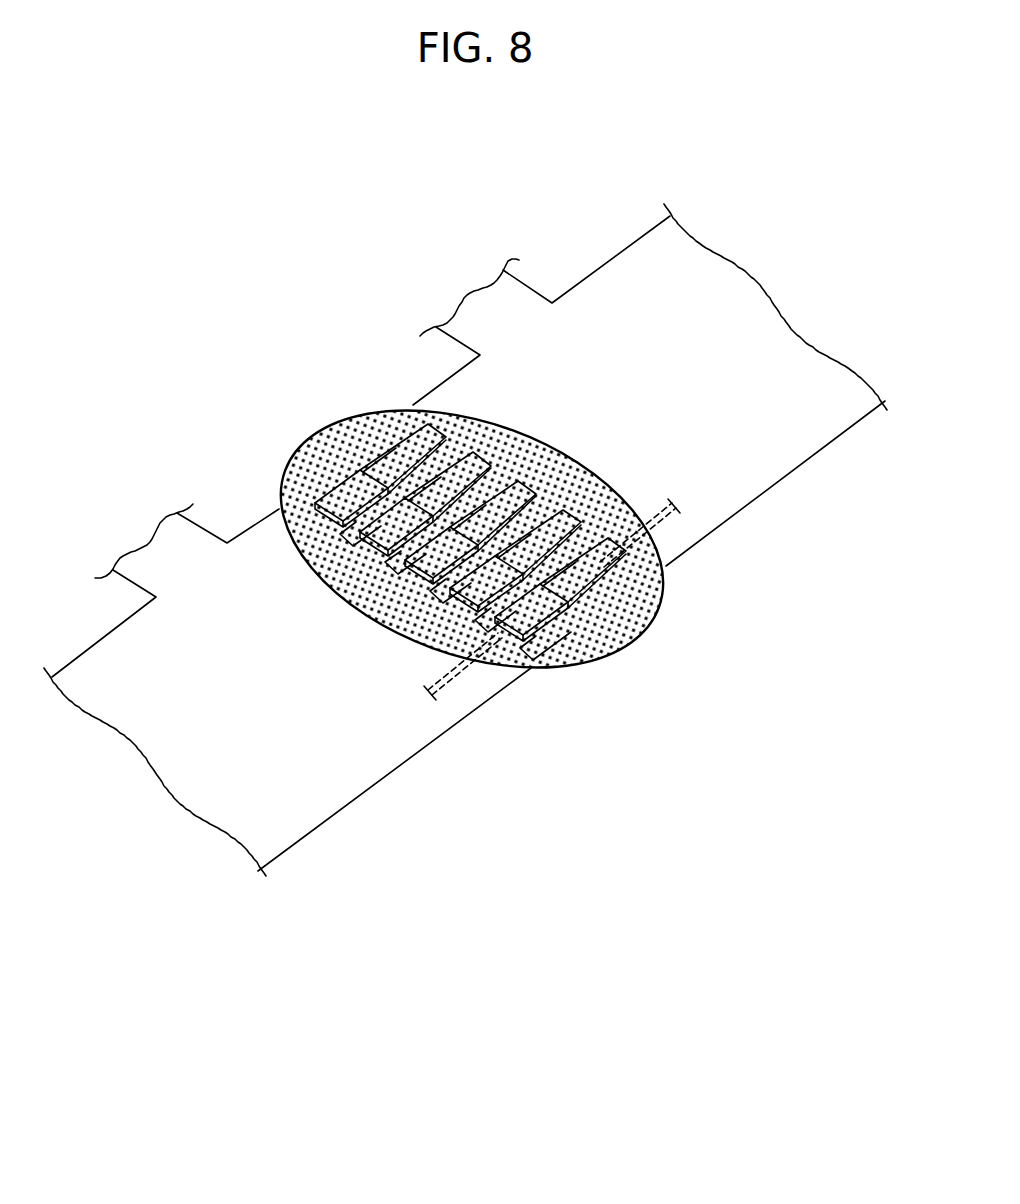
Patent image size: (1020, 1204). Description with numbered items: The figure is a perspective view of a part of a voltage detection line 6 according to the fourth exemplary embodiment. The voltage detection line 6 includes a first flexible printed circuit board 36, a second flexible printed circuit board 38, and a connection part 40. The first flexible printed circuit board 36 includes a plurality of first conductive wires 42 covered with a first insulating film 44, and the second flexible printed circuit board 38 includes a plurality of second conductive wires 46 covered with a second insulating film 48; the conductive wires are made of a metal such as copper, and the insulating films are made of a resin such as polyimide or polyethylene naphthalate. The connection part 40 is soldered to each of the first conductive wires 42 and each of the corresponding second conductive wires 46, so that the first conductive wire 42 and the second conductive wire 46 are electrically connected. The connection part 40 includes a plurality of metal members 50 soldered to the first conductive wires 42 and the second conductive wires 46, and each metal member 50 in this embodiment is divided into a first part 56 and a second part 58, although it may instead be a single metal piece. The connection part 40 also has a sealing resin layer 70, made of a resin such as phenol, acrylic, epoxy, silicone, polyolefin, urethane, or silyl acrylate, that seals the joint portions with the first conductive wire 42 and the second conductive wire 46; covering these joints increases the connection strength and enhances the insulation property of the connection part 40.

The voltage detection line 6 is at (538, 1040).
The first flexible printed circuit board 36 is at (287, 728).
The second flexible printed circuit board 38 is at (660, 391).
The connection part 40 is at (637, 658).
The first conductive wire 42 is at (460, 677).
The first insulating film 44 is at (352, 780).
The second conductive wire 46 is at (670, 517).
The second insulating film 48 is at (753, 476).
The metal member 50 is at (438, 481).
The first part 56 is at (345, 488).
The second part 58 is at (398, 462).
The sealing resin layer 70 is at (562, 668).